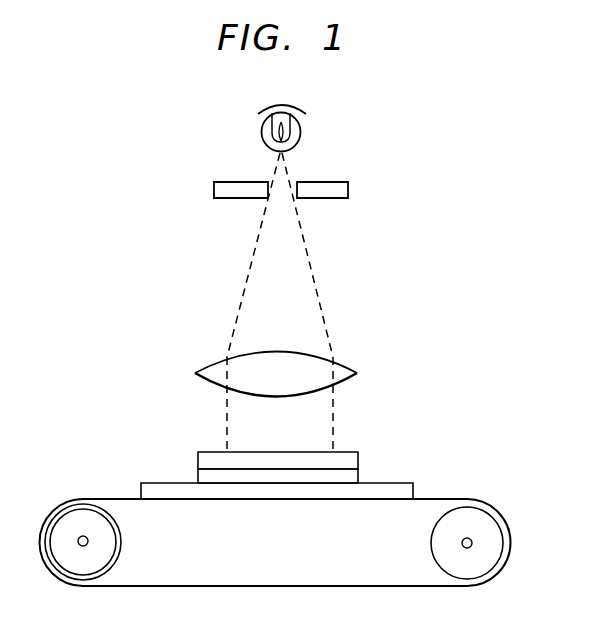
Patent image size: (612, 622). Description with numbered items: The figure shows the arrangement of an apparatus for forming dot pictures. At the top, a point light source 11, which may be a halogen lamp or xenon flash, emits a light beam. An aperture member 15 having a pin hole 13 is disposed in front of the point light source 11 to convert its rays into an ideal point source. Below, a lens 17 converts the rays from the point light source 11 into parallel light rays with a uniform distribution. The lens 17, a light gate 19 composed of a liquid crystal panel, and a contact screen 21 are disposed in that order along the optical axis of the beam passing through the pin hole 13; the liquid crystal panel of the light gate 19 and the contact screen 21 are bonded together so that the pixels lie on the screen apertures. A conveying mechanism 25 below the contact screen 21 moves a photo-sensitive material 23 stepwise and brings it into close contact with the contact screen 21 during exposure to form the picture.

The point light source 11 is at (300, 126).
The pin hole 13 is at (283, 188).
The aperture member 15 is at (350, 190).
The lens 17 is at (343, 374).
The light gate 19 is at (358, 454).
The contact screen 21 is at (358, 478).
The photo-sensitive material 23 is at (413, 490).
The conveying mechanism 25 is at (487, 552).